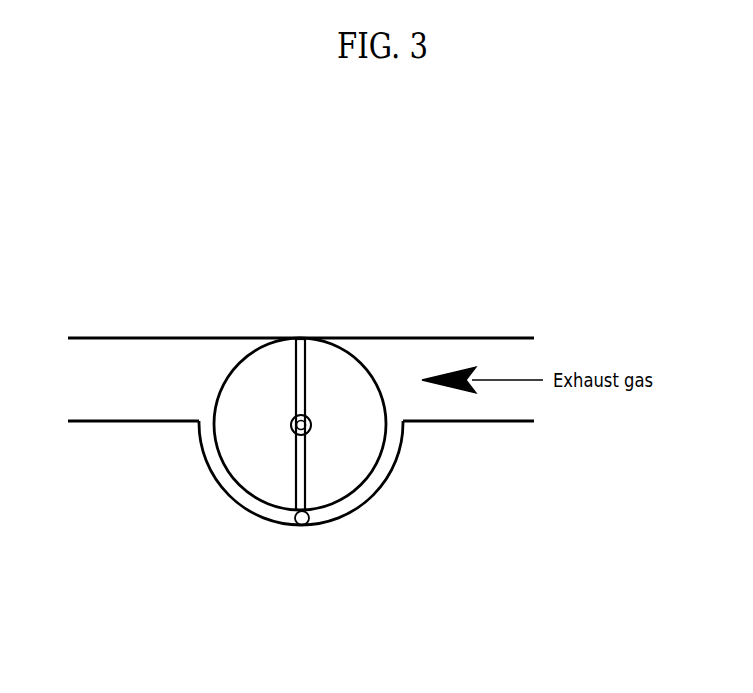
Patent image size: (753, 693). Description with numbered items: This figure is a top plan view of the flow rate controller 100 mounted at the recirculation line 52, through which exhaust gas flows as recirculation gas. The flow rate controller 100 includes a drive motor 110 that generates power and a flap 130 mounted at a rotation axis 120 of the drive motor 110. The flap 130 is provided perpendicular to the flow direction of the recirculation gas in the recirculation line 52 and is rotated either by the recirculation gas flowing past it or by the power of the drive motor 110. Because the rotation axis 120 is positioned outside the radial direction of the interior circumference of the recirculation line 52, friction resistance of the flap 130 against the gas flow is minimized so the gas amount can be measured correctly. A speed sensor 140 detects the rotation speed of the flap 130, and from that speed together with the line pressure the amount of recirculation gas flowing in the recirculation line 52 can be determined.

The recirculation line 52 is at (460, 337).
The flow rate controller 100 is at (314, 485).
The drive motor 110 is at (245, 497).
The rotation axis 120 is at (311, 426).
The flap 130 is at (306, 481).
The speed sensor 140 is at (287, 549).